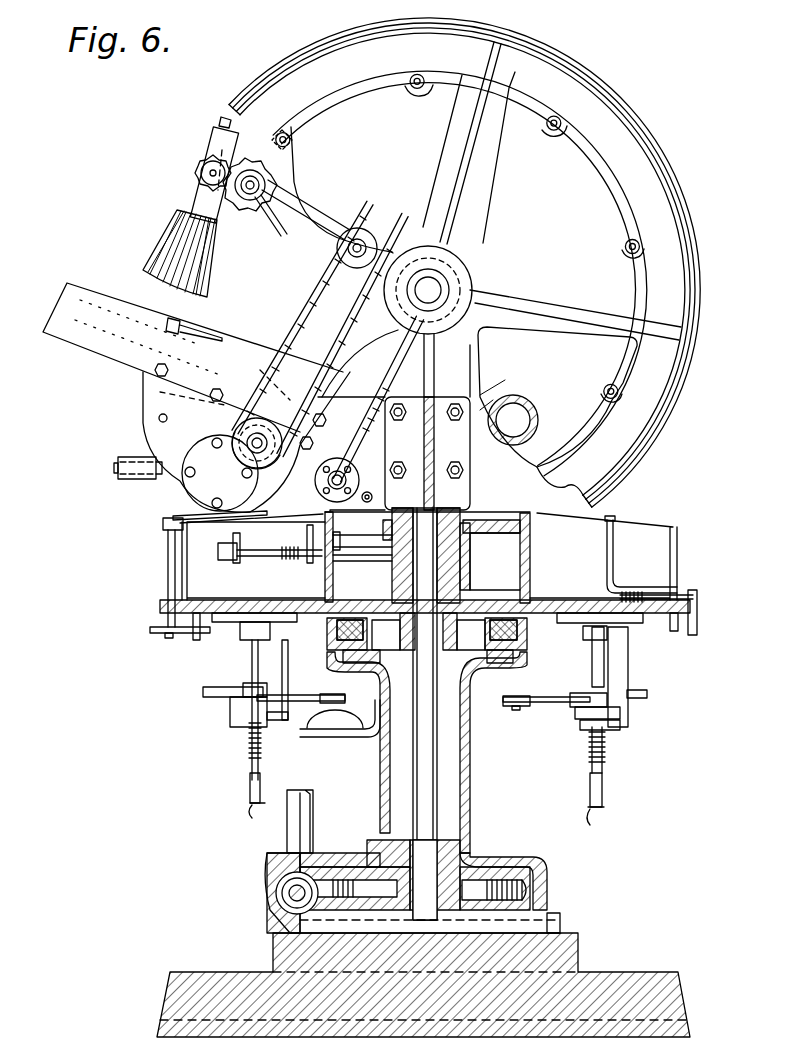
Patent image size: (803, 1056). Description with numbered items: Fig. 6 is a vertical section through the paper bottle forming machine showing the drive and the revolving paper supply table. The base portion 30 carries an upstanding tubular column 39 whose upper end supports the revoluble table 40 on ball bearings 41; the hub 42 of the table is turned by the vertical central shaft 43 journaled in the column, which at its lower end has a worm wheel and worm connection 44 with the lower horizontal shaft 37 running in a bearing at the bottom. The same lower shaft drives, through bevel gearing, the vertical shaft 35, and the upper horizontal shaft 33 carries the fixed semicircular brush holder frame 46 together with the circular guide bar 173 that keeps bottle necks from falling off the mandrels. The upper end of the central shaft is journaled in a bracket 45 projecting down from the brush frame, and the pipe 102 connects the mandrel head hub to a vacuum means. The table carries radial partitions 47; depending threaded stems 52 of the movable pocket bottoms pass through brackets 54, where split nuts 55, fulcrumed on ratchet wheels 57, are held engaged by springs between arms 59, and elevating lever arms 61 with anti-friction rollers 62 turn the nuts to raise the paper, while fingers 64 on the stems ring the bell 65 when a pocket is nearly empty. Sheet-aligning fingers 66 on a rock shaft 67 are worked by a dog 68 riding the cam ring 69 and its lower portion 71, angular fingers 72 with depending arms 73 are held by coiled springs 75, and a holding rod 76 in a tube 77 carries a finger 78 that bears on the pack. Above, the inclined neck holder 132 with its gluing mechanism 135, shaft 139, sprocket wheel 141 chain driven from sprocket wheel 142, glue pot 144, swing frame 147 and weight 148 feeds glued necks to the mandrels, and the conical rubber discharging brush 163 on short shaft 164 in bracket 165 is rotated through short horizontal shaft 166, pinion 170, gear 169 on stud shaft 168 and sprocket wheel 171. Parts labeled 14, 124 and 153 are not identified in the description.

The wheel frame 14 is at (448, 200).
The base portion 30 is at (627, 978).
The upper horizontal shaft 33 is at (432, 288).
The vertical shaft 35 is at (286, 829).
The lower horizontal shaft 37 is at (275, 893).
The tubular column 39 is at (470, 780).
The revoluble table 40 is at (672, 622).
The ball bearings 41 is at (517, 635).
The hub 42 is at (450, 630).
The vertical central shaft 43 is at (440, 745).
The worm wheel and worm connection 44 is at (335, 850).
The bracket 45 is at (471, 553).
The brush holder frame 46 is at (672, 168).
The radial partitions 47 is at (195, 575).
The threaded stems 52 is at (250, 752).
The brackets 54 is at (290, 664).
The split nuts 55 is at (592, 690).
The ratchet wheels 57 is at (228, 710).
The arms 59 is at (215, 686).
The elevating lever arms 61 is at (308, 692).
The anti-friction rollers 62 is at (347, 700).
The horizontally projecting fingers 64 is at (410, 809).
The bell 65 is at (345, 729).
The fingers 66 is at (236, 562).
The rock shaft 67 is at (265, 557).
The dog 68 is at (388, 562).
The cam ring 69 is at (383, 528).
The lower portion of the cam surface 71 is at (378, 545).
The angular fingers 72 is at (614, 554).
The arms 73 is at (698, 618).
The coiled springs 75 is at (670, 585).
The vertically extending rod 76 is at (163, 522).
The tube 77 is at (166, 548).
The horizontally projecting finger 78 is at (255, 514).
The pipe 102 is at (525, 398).
The cap 124 is at (491, 523).
The inclined neck holder 132 is at (103, 312).
The gluing mechanism 135 is at (143, 430).
The shaft 139 is at (240, 425).
The sprocket wheel 141 is at (270, 418).
The sprocket wheel 142 is at (338, 253).
The glue pot 144 is at (176, 482).
The swing frame 147 is at (118, 465).
The weight 148 is at (118, 477).
The pin 153 is at (200, 332).
The conical rubber discharging brush 163 is at (168, 240).
The short shaft 164 is at (226, 118).
The bracket 165 is at (212, 137).
The short horizontal shaft 166 is at (195, 173).
The stud shaft 168 is at (276, 176).
The gear 169 is at (290, 198).
The pinion 170 is at (206, 165).
The sprocket wheel 171 is at (292, 146).
The circular guide bar 173 is at (606, 190).